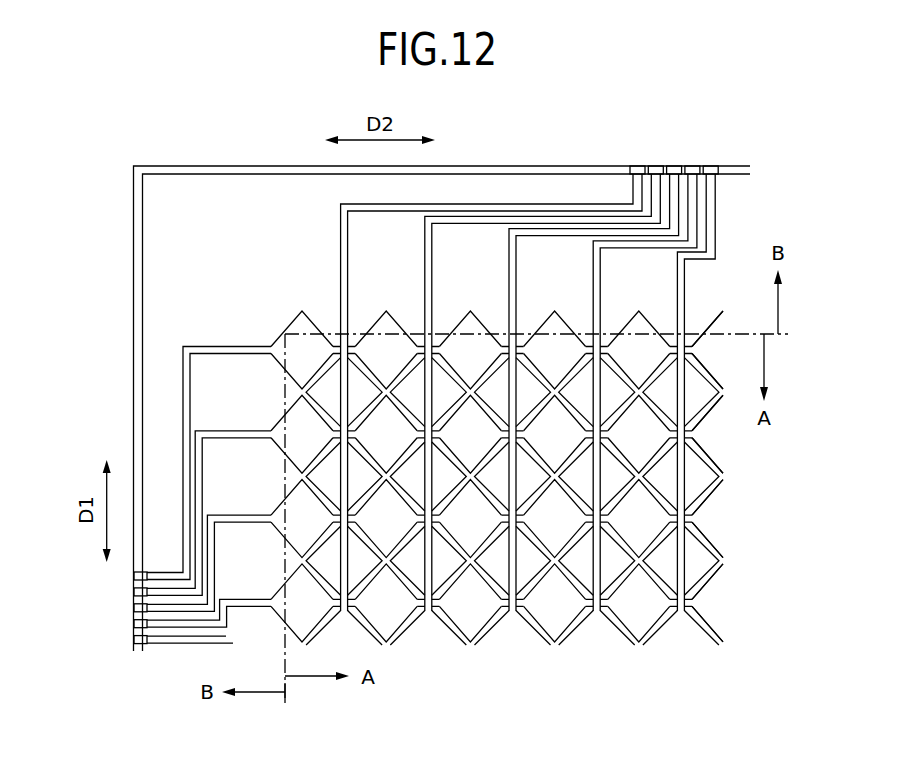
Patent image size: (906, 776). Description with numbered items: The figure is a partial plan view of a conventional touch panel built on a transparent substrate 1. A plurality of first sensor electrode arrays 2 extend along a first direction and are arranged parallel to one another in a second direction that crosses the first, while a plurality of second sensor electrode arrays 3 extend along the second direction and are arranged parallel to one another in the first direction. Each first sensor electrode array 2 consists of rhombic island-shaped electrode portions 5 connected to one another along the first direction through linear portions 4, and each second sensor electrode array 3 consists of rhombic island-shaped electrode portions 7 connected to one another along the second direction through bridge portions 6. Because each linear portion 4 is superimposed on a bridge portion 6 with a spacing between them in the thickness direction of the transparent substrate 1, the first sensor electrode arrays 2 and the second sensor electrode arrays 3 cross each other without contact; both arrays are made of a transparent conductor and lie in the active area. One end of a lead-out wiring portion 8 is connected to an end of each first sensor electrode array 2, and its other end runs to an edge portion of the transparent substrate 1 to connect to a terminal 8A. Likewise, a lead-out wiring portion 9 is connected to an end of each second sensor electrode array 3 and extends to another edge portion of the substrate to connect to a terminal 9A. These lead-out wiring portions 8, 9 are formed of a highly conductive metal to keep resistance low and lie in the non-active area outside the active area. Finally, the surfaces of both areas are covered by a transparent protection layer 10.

The transparent substrate 1 is at (208, 166).
The transparent protection layer 10 is at (143, 220).
The lead-out wiring portion 8 is at (592, 278).
The terminal 8A is at (691, 166).
The lead-out wiring portion 9 is at (237, 516).
The terminal 9A is at (134, 624).
The linear portion 4 is at (686, 498).
The bridge portion 6 is at (600, 523).
The rhombic island-shaped electrode portion 7 is at (643, 531).
The rhombic island-shaped electrode portion 5 is at (582, 570).
The first sensor electrode array 2 is at (591, 659).
The second sensor electrode array 3 is at (728, 514).